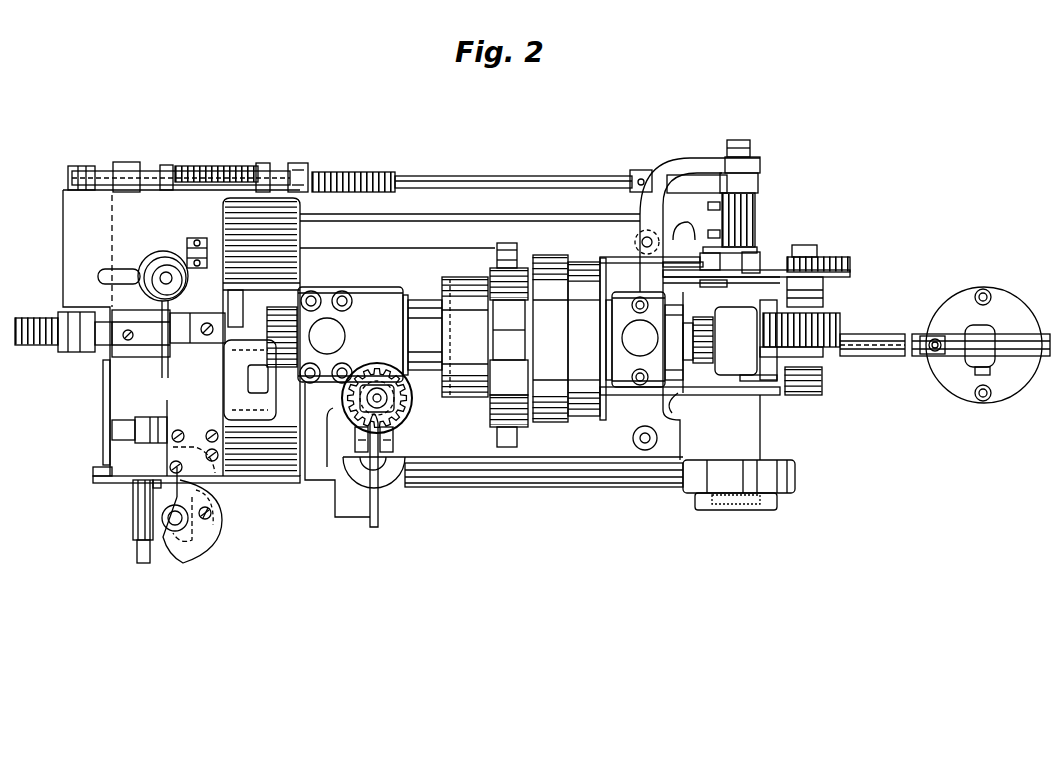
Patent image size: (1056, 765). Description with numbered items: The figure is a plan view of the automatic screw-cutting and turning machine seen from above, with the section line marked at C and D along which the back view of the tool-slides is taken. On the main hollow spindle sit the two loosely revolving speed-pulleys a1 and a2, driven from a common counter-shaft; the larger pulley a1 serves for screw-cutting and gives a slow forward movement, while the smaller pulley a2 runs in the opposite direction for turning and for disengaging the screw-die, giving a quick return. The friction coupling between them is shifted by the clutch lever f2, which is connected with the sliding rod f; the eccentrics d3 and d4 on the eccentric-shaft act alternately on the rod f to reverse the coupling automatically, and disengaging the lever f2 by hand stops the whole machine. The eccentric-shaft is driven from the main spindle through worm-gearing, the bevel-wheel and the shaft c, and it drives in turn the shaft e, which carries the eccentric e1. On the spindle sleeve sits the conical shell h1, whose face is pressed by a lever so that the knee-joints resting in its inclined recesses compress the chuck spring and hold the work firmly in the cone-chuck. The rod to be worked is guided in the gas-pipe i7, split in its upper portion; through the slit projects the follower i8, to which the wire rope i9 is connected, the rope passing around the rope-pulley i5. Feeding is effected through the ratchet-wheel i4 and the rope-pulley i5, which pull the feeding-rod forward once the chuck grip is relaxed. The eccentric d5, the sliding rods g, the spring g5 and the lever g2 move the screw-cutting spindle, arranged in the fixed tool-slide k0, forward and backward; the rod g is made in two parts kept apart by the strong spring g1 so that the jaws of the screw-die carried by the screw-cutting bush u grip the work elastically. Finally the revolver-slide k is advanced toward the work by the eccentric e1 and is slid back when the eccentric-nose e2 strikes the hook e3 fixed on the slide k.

The lever g2 is at (70, 177).
The strong spring g1 is at (202, 168).
The section line end point C is at (278, 165).
The spring g5 is at (355, 173).
The sliding rod g is at (500, 178).
The fixed tool-slide k0 is at (143, 303).
The screw-cutting bush u is at (63, 321).
The revolver-slide k is at (140, 420).
The shaft e is at (175, 524).
The eccentric e1 is at (180, 526).
The eccentric-nose e2 is at (211, 512).
The hook e3 is at (218, 523).
The section line end point D is at (273, 488).
The speed-pulley a2 is at (465, 337).
The speed-pulley a1 is at (550, 338).
The sliding rod f is at (578, 263).
The coupling lever f2 is at (492, 423).
The shaft c is at (544, 475).
The conical shell h1 is at (738, 330).
The eccentric d5 is at (702, 217).
The eccentric d4 is at (712, 252).
The eccentric d3 is at (753, 257).
The ratchet-wheel i4 is at (829, 260).
The rope-pulley i5 is at (845, 330).
The wire rope i9 is at (862, 342).
The gas-pipe i7 is at (885, 339).
The follower i8 is at (958, 338).